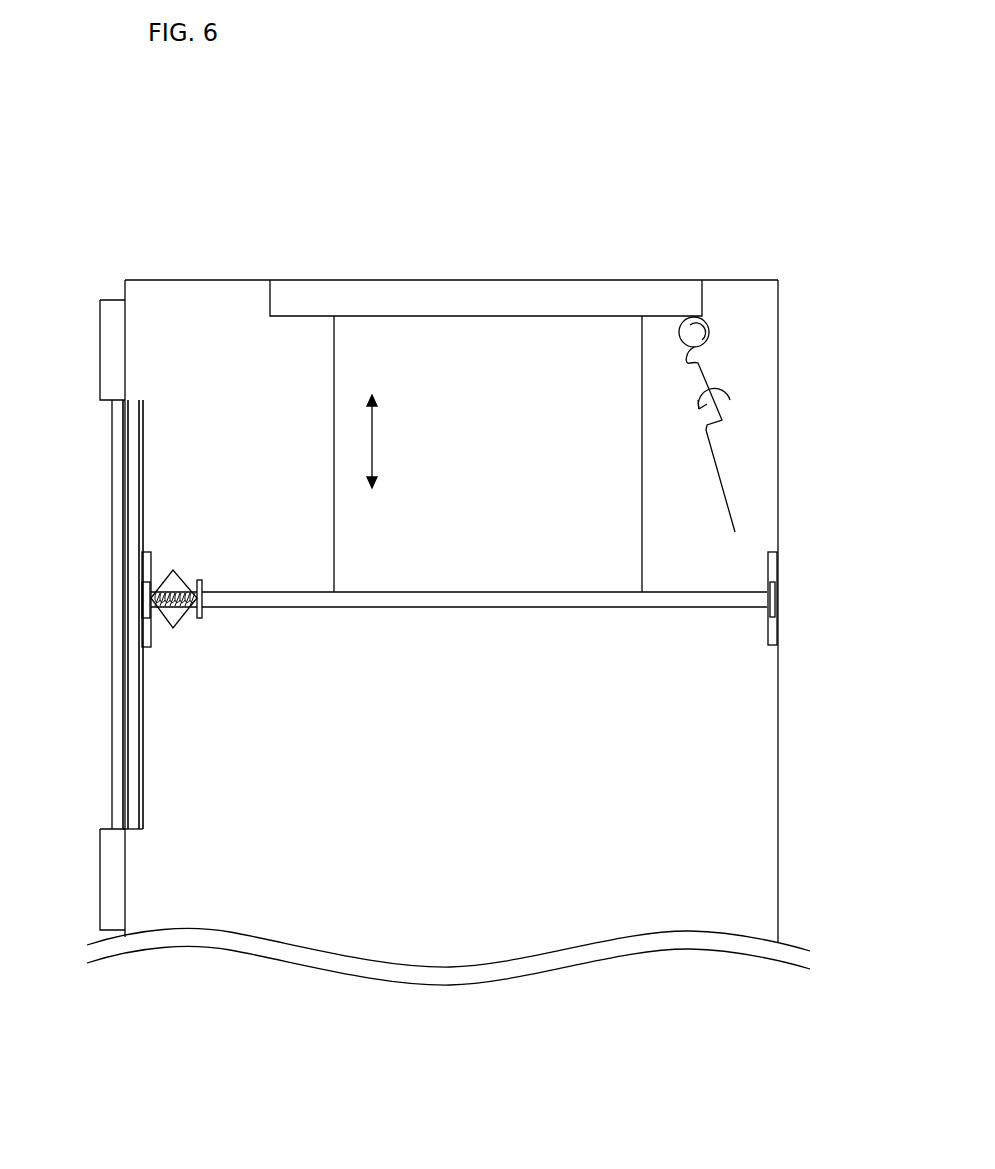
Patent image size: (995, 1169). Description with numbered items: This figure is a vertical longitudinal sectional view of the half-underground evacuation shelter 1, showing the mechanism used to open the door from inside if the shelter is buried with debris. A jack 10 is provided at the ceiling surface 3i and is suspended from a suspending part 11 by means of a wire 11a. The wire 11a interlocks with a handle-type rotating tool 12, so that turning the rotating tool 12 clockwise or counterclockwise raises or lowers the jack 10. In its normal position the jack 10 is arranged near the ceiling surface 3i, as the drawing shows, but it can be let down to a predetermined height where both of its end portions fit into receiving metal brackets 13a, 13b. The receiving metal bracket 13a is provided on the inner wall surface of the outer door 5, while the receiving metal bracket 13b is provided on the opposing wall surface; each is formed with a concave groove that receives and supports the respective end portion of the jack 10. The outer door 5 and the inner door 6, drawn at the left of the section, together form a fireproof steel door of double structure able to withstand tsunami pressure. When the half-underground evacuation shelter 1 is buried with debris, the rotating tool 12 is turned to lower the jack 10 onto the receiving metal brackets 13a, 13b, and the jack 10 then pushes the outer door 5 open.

The half-underground evacuation shelter 1 is at (637, 209).
The ceiling surface 3i is at (191, 280).
The outer door 5 is at (120, 655).
The inner door 6 is at (137, 803).
The jack 10 is at (437, 597).
The suspending part 11 is at (490, 300).
The wire 11a is at (334, 417).
The rotating tool 12 is at (705, 375).
The receiving metal bracket 13a is at (147, 568).
The receiving metal bracket 13b is at (772, 570).